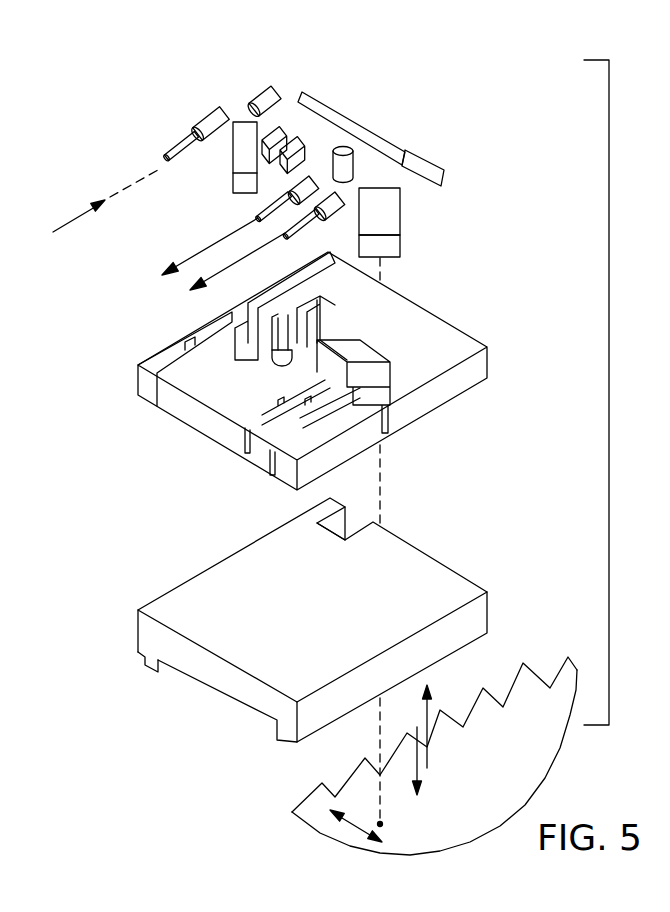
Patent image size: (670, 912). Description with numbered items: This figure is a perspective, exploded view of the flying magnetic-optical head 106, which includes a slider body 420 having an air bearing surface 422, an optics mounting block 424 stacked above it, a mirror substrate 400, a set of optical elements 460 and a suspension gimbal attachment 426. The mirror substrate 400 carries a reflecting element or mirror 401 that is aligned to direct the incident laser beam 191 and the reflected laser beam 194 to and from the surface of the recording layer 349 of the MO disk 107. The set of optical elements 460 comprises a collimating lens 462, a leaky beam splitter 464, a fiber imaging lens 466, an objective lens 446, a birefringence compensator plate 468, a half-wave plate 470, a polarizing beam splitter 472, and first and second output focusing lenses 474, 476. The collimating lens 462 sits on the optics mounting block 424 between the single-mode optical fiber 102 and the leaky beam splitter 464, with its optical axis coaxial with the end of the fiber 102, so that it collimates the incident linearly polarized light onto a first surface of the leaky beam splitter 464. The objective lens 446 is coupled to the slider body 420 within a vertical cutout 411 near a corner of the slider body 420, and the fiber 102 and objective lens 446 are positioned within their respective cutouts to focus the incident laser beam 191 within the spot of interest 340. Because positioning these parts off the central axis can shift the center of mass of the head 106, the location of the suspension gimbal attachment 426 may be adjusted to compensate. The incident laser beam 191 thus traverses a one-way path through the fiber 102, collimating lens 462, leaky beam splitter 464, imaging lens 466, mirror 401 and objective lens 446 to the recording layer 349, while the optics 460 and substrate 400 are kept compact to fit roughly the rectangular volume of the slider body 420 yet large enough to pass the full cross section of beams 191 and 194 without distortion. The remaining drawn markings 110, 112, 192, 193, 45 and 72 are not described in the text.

The set of optical elements 460 is at (110, 95).
The single-mode optical fiber 102 is at (168, 152).
The collimating lens 462 is at (207, 130).
The leaky beam splitter 464 is at (243, 126).
The fiber imaging lens 466 is at (265, 94).
The birefringence compensator plate 468 is at (288, 127).
The mirror substrate 400 is at (328, 105).
The mirror 401 is at (400, 163).
The half-wave plate 470 is at (348, 150).
The objective lens 446 is at (352, 148).
The first output focusing lens 474 is at (380, 198).
The polarizing beam splitter 472 is at (383, 222).
The second output focusing lens 476 is at (298, 183).
The pin 110 is at (285, 200).
The pin 112 is at (292, 243).
The incident laser beam 191 is at (237, 488).
The direction arrow 192 is at (189, 259).
The direction arrow 193 is at (216, 278).
The optics mounting block 424 is at (440, 388).
The suspension gimbal attachment 426 is at (275, 363).
The vertical cutout 411 is at (340, 518).
The slider body 420 is at (473, 623).
The air bearing surface 422 is at (145, 657).
The reflected laser beam 194 is at (448, 721).
The spot of interest 340 is at (384, 824).
The rotation arrow 45 is at (357, 828).
The recording layer 349 is at (480, 807).
The MO disk 107 is at (563, 747).
The flying magnetic-optical head 106 is at (621, 392).
The partial numeral 72 is at (9, 498).